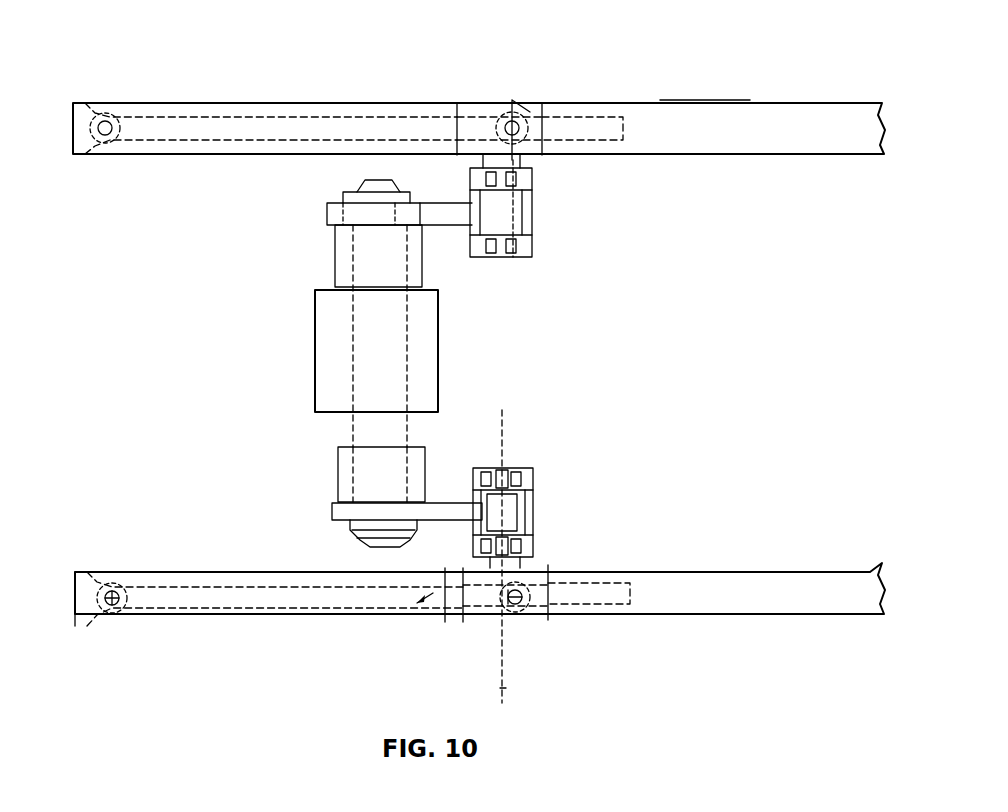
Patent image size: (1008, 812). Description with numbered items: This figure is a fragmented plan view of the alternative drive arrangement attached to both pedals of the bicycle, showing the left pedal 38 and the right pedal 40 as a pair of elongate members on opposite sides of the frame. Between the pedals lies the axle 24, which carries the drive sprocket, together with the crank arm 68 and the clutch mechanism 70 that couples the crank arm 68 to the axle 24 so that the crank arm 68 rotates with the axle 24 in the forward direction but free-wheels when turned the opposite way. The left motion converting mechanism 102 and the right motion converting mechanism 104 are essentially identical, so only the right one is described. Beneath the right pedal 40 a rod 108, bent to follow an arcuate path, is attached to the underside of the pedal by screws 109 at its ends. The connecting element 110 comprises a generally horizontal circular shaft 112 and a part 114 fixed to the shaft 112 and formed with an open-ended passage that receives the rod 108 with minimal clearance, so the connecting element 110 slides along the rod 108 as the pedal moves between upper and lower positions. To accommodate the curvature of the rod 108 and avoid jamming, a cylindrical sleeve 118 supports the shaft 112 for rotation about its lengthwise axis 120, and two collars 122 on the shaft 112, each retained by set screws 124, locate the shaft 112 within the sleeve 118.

The left pedal 38 is at (148, 103).
The right pedal 40 is at (184, 570).
The axle 24 is at (353, 420).
The clutch mechanism 70 is at (338, 478).
The crank arm 68 is at (452, 521).
The left motion converting mechanism 102 is at (530, 265).
The right motion converting mechanism 104 is at (576, 428).
The rod 108 is at (214, 612).
The screws 109 is at (92, 565).
The connecting element 110 is at (567, 630).
The circular shaft 112 is at (465, 558).
The part 114 is at (403, 624).
The cylindrical sleeve 118 is at (533, 503).
The lengthwise axis 120 is at (505, 695).
The collars 122 is at (533, 475).
The set screws 124 is at (500, 468).